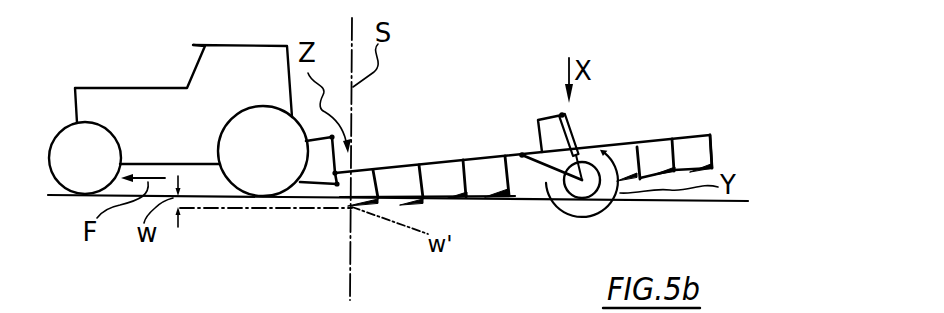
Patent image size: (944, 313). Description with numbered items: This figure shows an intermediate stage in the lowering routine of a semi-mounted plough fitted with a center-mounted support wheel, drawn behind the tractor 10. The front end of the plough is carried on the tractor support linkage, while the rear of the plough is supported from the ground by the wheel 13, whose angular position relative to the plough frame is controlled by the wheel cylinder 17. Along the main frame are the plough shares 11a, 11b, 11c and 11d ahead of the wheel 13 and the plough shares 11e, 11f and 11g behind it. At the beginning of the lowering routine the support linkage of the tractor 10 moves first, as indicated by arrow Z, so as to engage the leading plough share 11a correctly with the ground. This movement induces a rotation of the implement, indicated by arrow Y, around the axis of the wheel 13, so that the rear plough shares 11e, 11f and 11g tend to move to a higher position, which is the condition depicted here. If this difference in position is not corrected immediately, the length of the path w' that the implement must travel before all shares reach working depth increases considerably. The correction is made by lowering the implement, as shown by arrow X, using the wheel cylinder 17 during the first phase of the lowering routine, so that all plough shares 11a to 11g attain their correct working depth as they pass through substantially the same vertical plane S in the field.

The tractor 10 is at (155, 113).
The plough share 11a is at (371, 206).
The plough share 11b is at (427, 178).
The plough share 11c is at (459, 177).
The plough share 11d is at (510, 183).
The plough share 11e is at (639, 154).
The plough share 11f is at (685, 150).
The plough share 11g is at (713, 153).
The wheel 13 is at (588, 192).
The wheel cylinder 17 is at (575, 129).